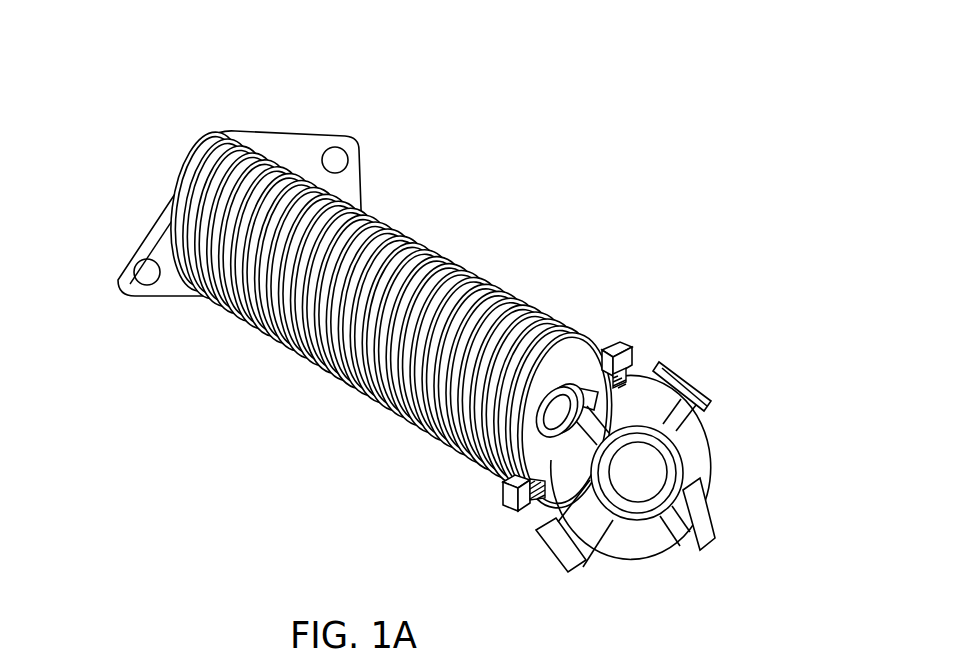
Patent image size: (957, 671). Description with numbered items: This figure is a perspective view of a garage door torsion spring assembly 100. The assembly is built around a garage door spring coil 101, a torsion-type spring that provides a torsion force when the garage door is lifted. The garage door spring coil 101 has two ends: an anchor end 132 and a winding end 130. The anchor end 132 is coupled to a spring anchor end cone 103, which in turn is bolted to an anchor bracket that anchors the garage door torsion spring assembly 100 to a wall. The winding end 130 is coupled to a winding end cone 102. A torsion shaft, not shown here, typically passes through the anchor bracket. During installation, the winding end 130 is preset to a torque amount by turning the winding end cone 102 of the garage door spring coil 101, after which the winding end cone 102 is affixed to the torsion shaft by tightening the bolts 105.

The garage door torsion spring assembly 100 is at (578, 86).
The garage door spring coil 101 is at (455, 268).
The winding end cone 102 is at (693, 412).
The spring anchor end cone 103 is at (157, 235).
The bolts 105 is at (620, 343).
The winding end 130 is at (614, 312).
The anchor end 132 is at (184, 315).